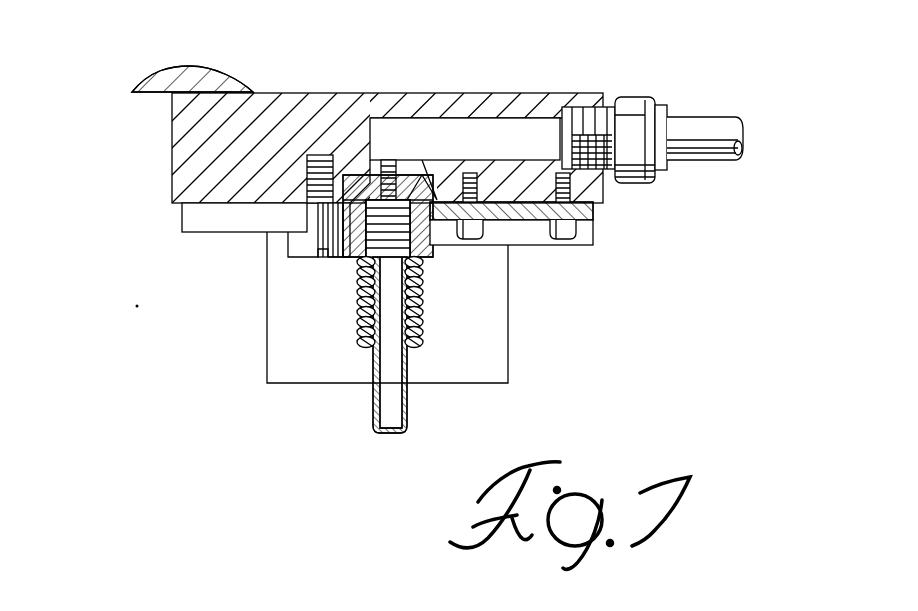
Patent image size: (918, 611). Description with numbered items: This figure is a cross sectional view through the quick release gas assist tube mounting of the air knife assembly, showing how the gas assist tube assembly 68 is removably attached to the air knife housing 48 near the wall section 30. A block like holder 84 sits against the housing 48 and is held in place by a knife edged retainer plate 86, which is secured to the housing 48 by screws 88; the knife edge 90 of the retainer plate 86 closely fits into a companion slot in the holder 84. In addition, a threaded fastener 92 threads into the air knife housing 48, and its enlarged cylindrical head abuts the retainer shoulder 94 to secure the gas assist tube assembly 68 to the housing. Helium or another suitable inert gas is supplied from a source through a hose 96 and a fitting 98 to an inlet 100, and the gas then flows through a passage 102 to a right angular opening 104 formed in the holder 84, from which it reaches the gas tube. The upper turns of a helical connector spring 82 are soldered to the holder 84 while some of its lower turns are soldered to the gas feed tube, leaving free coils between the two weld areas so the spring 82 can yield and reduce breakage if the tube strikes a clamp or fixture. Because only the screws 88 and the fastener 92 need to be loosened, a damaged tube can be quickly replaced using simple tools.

The wall 30 is at (163, 78).
The air knife housing 48 is at (185, 127).
The gas assist tube assembly 68 is at (370, 399).
The helical connector spring 82 is at (420, 312).
The holder 84 is at (352, 165).
The retainer plate 86 is at (527, 223).
The screws 88 is at (577, 227).
The knife edge 90 is at (465, 139).
The threaded fastener 92 is at (288, 247).
The retainer shoulder 94 is at (330, 217).
The hose 96 is at (722, 125).
The fitting 98 is at (633, 105).
The inlet 100 is at (545, 94).
The passage 102 is at (415, 127).
The right angular opening 104 is at (388, 187).